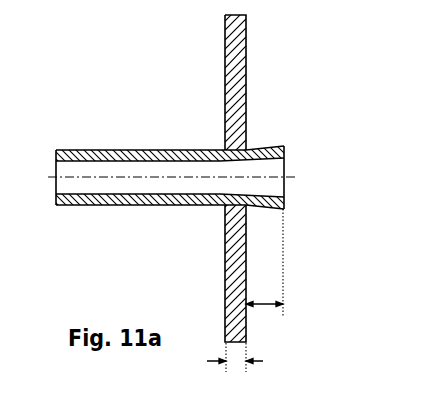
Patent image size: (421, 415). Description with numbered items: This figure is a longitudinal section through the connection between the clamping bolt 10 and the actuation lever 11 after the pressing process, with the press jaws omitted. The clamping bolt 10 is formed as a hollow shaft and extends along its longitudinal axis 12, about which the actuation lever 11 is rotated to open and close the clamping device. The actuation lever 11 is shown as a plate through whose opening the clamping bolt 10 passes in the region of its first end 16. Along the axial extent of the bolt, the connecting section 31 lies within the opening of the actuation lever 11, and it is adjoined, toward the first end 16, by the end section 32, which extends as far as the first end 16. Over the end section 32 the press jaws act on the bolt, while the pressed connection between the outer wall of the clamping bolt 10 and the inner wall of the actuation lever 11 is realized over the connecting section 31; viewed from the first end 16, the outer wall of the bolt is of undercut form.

The clamping bolt 10 is at (103, 152).
The actuation lever 11 is at (250, 40).
The longitudinal axis 12 is at (98, 178).
The first end 16 is at (281, 146).
The connecting section 31 is at (236, 358).
The end section 32 is at (263, 304).